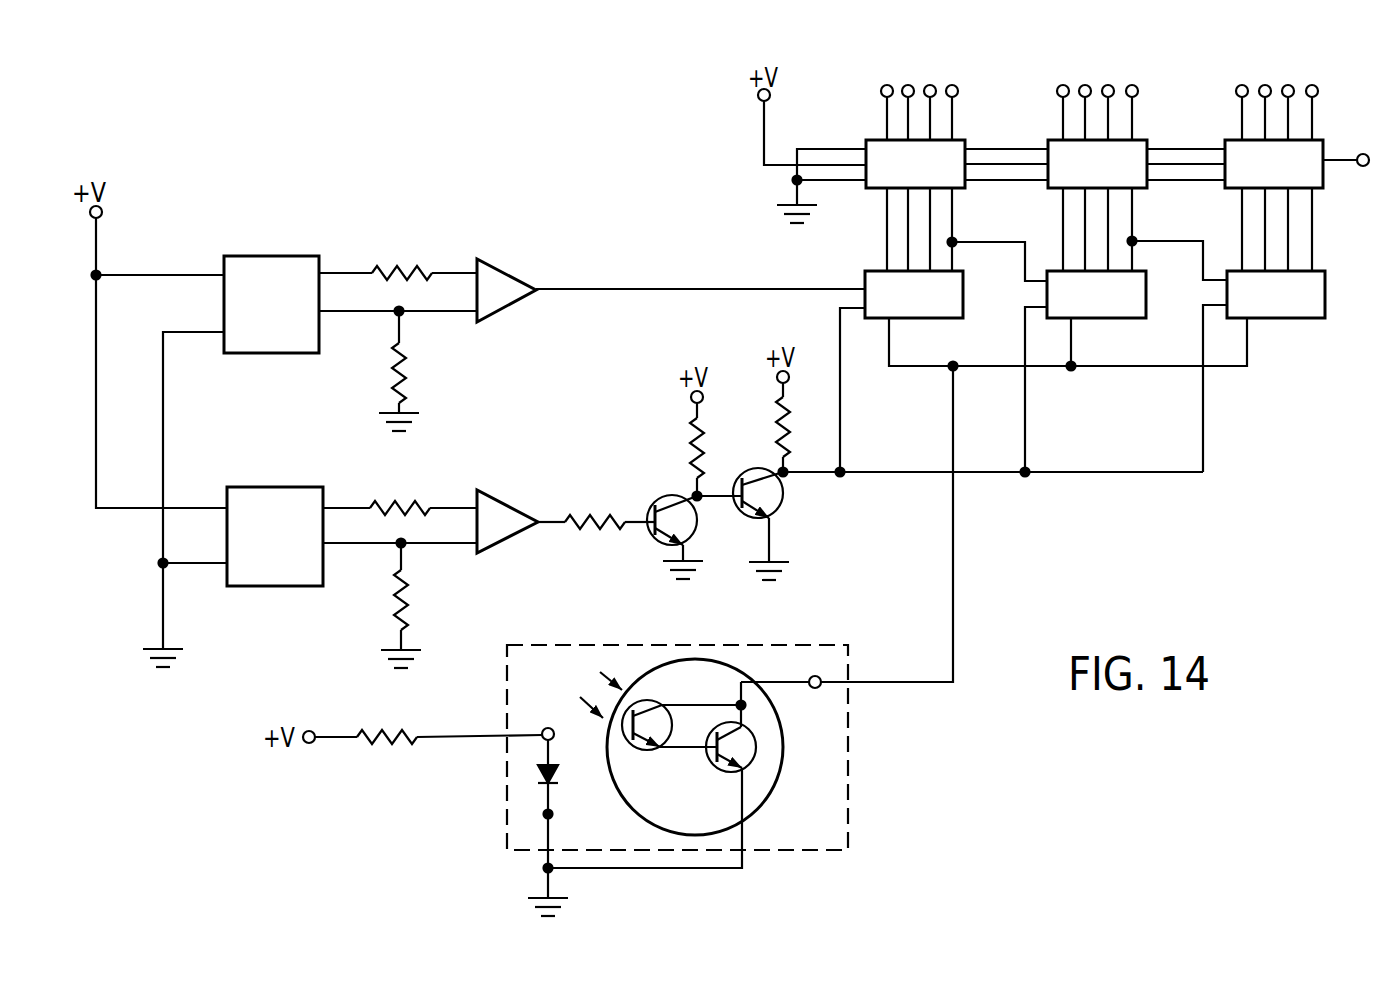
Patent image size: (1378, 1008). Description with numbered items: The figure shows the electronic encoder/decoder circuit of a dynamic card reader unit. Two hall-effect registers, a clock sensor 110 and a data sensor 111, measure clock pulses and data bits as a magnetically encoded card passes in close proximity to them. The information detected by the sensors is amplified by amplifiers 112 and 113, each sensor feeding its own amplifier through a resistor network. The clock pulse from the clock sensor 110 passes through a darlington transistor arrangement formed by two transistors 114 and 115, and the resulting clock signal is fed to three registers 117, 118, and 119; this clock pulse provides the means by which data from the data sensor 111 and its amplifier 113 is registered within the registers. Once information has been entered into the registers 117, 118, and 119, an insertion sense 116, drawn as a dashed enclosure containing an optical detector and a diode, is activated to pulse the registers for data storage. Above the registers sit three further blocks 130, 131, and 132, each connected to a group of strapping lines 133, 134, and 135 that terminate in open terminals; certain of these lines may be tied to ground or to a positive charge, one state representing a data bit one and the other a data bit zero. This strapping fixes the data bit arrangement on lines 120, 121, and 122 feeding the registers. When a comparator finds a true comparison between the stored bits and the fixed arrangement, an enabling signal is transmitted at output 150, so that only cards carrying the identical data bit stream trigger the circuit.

The clock sensor 110 is at (272, 586).
The data sensor 111 is at (268, 353).
The amplifier 112 is at (518, 532).
The amplifier 113 is at (507, 312).
The transistor 114 is at (657, 538).
The transistor 115 is at (783, 500).
The insertion sense 116 is at (848, 768).
The register 117 is at (931, 308).
The register 118 is at (1115, 308).
The register 119 is at (1294, 308).
The line 120 is at (880, 234).
The line 121 is at (1053, 219).
The line 122 is at (1236, 220).
The latch 130 is at (931, 178).
The latch 131 is at (1115, 178).
The latch 132 is at (1293, 178).
The strapping line 133 is at (922, 82).
The strapping line 134 is at (1112, 78).
The strapping line 135 is at (1293, 78).
The output 150 is at (1360, 166).